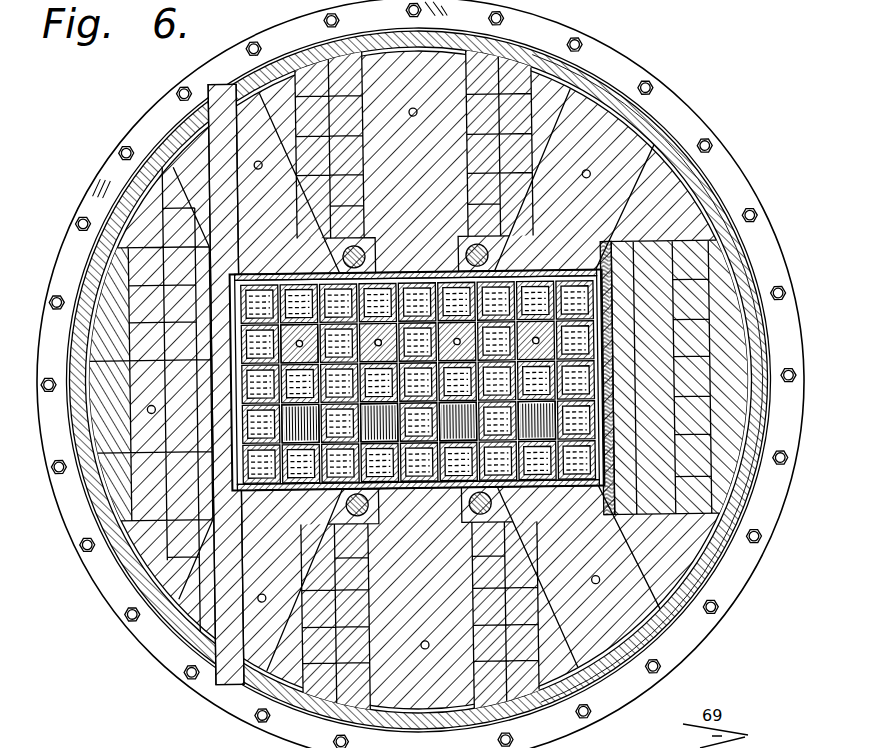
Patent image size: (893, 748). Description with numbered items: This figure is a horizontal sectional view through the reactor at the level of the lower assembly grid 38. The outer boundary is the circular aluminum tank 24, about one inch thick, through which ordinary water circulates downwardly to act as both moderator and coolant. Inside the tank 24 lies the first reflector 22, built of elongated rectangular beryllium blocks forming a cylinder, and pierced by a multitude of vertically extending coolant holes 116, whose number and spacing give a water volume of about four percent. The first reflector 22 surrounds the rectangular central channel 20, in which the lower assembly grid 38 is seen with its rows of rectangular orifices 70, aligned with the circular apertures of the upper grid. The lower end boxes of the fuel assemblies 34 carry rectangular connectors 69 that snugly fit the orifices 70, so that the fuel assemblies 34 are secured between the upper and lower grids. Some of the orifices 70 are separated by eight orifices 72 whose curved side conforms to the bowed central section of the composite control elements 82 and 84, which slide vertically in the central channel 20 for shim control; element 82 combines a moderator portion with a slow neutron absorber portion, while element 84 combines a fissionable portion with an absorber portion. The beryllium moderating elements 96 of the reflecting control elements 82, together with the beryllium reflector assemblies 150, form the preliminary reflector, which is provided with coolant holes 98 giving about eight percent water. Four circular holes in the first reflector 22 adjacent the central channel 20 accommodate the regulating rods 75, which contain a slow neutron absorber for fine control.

The central channel 20 is at (612, 358).
The first reflector 22 is at (408, 168).
The tank 24 is at (607, 85).
The fuel assemblies 34 is at (459, 466).
The lower assembly grid 38 is at (383, 278).
The rectangular connectors 69 is at (304, 483).
The rectangular orifices 70 is at (260, 292).
The orifices 72 is at (283, 330).
The regulating rods 75 is at (470, 249).
The control element 82 is at (298, 320).
The control element 84 is at (547, 420).
The beryllium moderating elements 96 is at (390, 327).
The coolant holes 98 is at (382, 342).
The coolant holes 116 is at (413, 109).
The beryllium reflector assemblies 150 is at (573, 290).